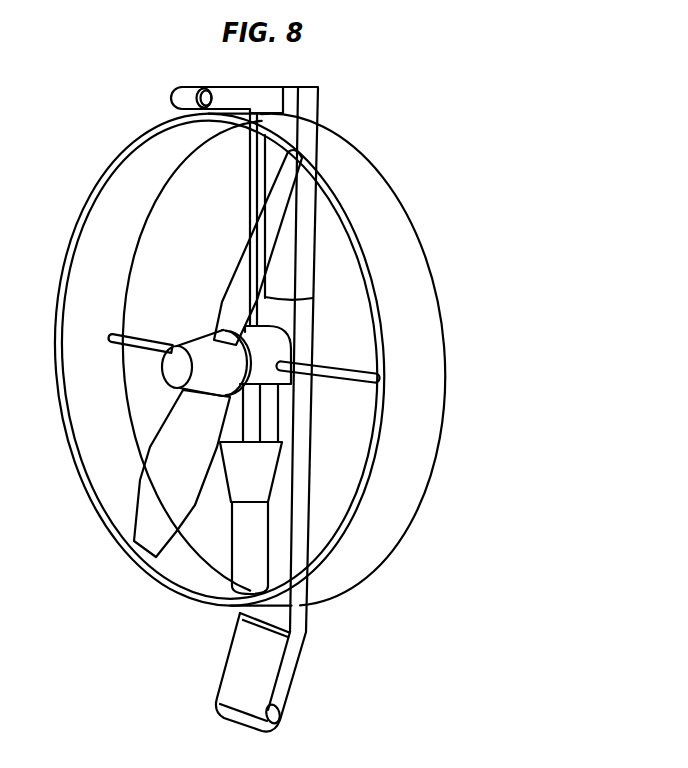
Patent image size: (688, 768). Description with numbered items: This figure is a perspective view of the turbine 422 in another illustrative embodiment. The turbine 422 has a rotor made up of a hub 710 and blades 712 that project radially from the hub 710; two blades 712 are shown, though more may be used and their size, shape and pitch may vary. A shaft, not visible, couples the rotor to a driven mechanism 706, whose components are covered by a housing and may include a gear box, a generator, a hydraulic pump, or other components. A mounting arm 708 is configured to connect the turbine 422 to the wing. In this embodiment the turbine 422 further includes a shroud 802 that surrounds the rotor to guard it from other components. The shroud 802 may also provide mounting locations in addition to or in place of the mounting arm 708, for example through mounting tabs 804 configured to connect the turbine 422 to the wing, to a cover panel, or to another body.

The turbine 422 is at (478, 168).
The shroud 802 is at (422, 327).
The mounting tabs 804 is at (180, 88).
The driven mechanism 706 is at (273, 416).
The mounting arm 708 is at (240, 578).
The hub 710 is at (193, 340).
The blades 712 is at (252, 258).